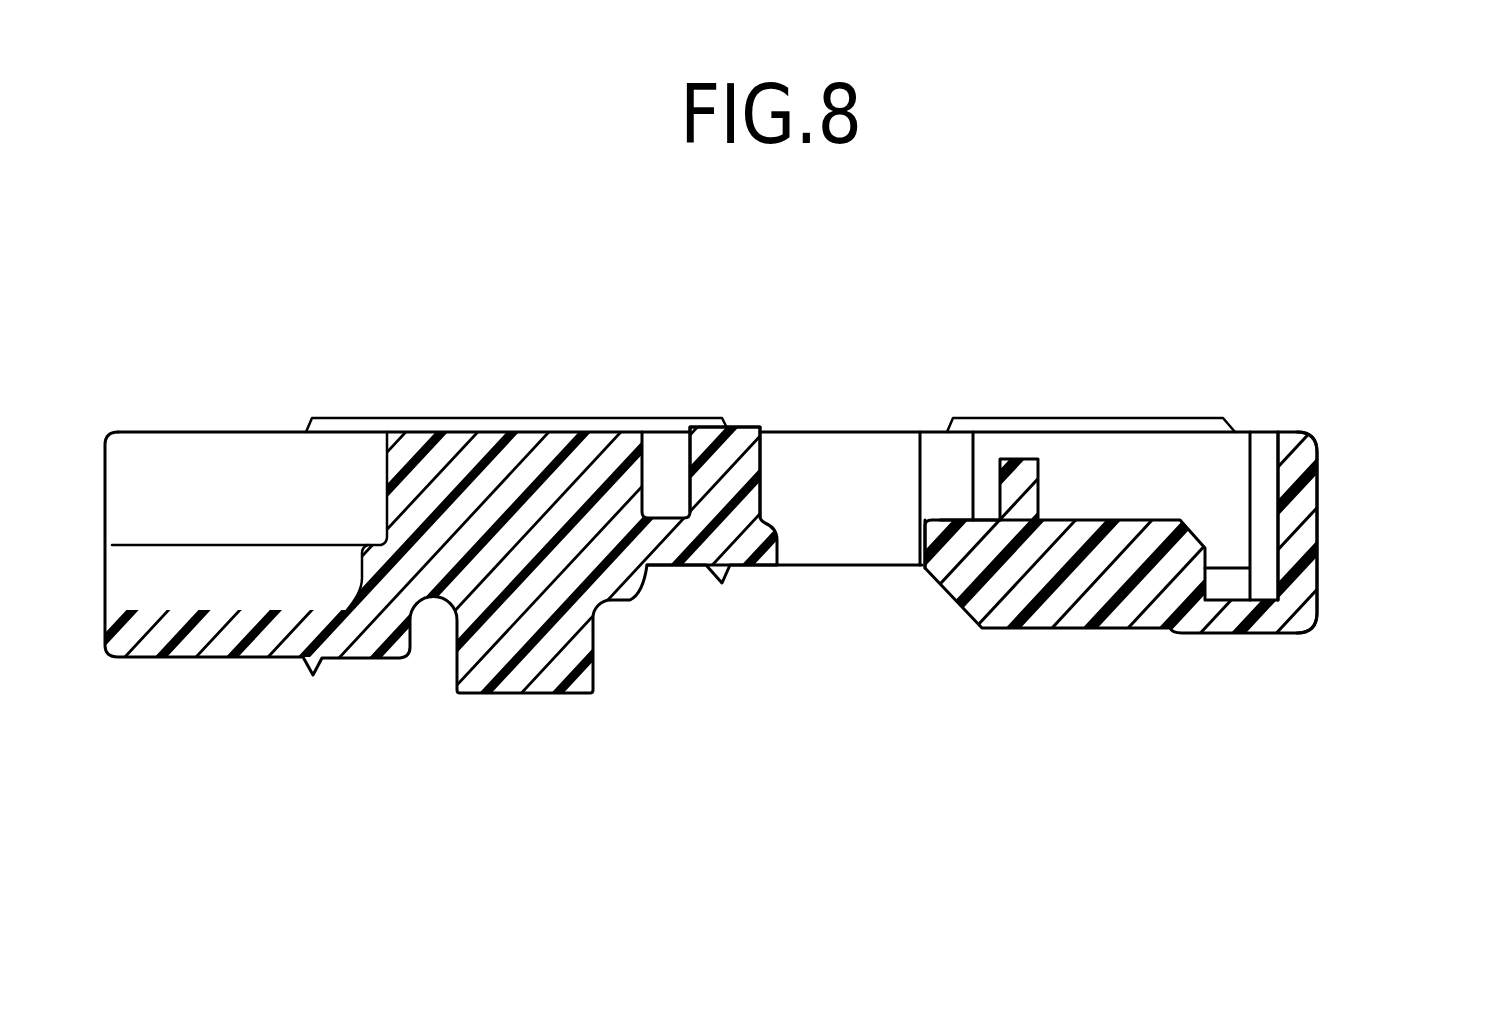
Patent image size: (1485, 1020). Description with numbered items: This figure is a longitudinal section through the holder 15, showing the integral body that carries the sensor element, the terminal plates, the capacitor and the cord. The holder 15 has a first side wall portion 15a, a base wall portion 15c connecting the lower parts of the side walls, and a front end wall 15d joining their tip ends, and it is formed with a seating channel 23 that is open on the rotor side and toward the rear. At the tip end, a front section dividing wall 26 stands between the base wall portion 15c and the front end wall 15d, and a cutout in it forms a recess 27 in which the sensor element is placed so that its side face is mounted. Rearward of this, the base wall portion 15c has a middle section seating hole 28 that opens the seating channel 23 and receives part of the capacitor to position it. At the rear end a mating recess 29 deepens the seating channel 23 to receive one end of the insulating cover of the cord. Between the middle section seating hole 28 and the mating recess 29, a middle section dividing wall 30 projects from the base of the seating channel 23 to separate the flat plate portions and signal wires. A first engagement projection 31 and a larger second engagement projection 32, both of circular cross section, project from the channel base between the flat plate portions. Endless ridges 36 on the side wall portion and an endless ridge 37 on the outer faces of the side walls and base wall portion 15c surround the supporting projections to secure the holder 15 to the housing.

The holder 15 is at (632, 418).
The first side wall portion 15a is at (940, 430).
The base wall portion 15c is at (973, 517).
The front end wall 15d is at (1318, 535).
The seating channel 23 is at (1130, 480).
The front section dividing wall 26 is at (1188, 543).
The recess 27 is at (1207, 572).
The middle section seating hole 28 is at (922, 543).
The mating recess 29 is at (357, 587).
The middle section dividing wall 30 is at (462, 468).
The first engagement projection 31 is at (1030, 478).
The second engagement projection 32 is at (717, 438).
The endless ridges 36 is at (1195, 430).
The endless ridge 37 is at (540, 425).